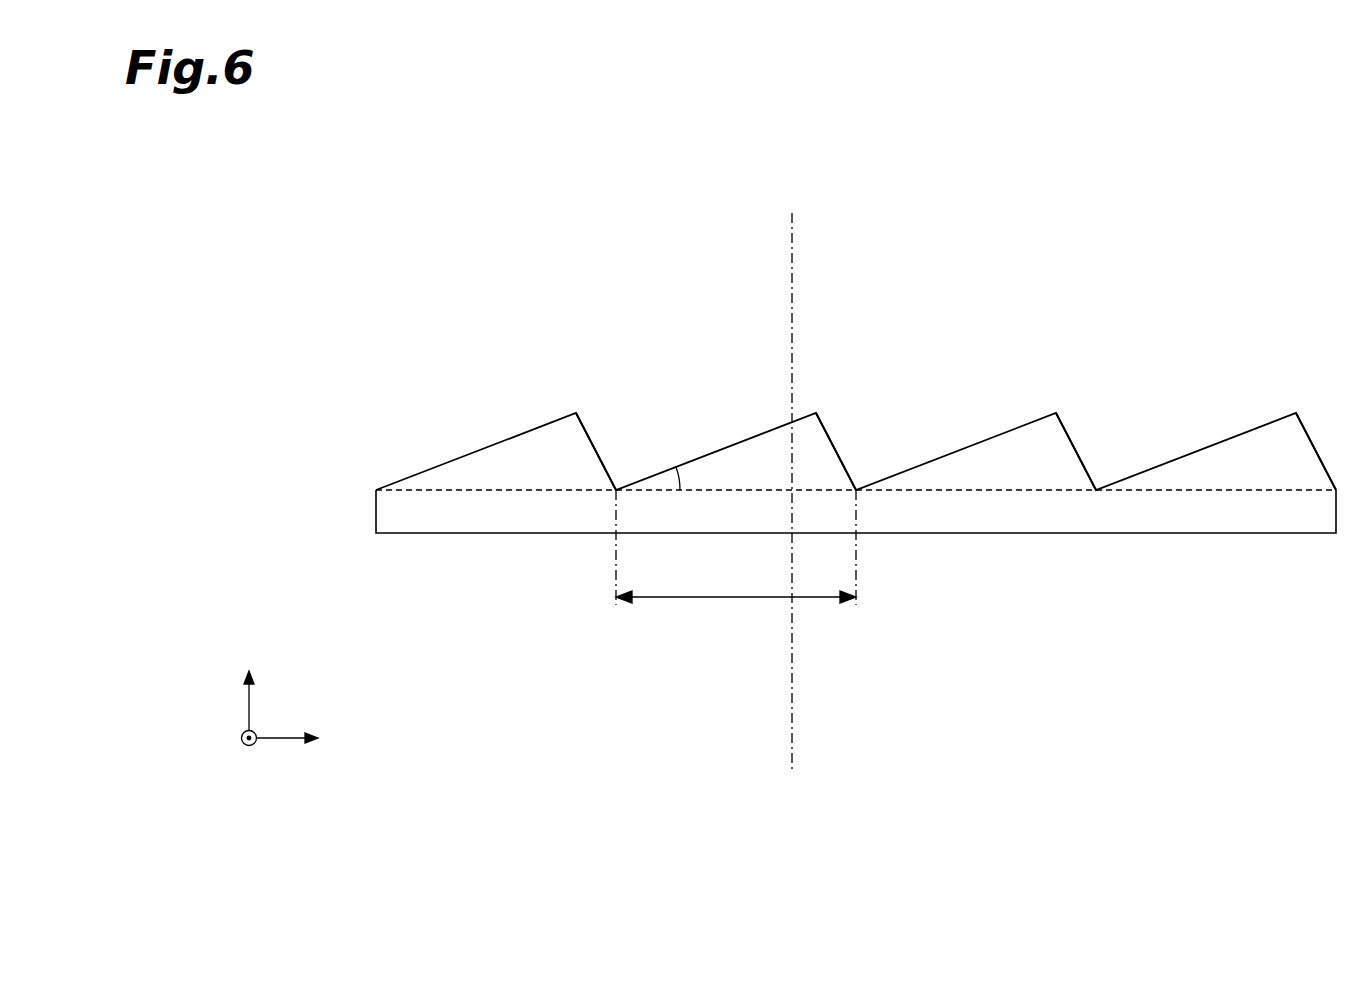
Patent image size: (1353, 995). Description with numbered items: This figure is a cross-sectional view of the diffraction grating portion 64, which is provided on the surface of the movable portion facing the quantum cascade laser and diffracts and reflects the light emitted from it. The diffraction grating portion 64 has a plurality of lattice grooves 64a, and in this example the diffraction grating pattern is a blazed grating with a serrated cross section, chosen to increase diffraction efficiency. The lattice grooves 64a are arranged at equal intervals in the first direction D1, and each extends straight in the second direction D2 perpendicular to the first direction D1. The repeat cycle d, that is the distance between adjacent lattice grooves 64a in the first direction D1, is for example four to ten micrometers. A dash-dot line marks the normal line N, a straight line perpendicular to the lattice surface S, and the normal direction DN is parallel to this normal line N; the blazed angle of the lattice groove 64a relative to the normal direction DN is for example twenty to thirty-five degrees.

The diffraction grating portion 64 is at (477, 444).
The lattice groove 64a is at (596, 443).
The lattice surface S is at (1265, 490).
The normal line N is at (794, 244).
The repeat cycle d is at (733, 600).
The normal direction DN is at (250, 686).
The first direction D1 is at (307, 740).
The second direction D2 is at (249, 757).